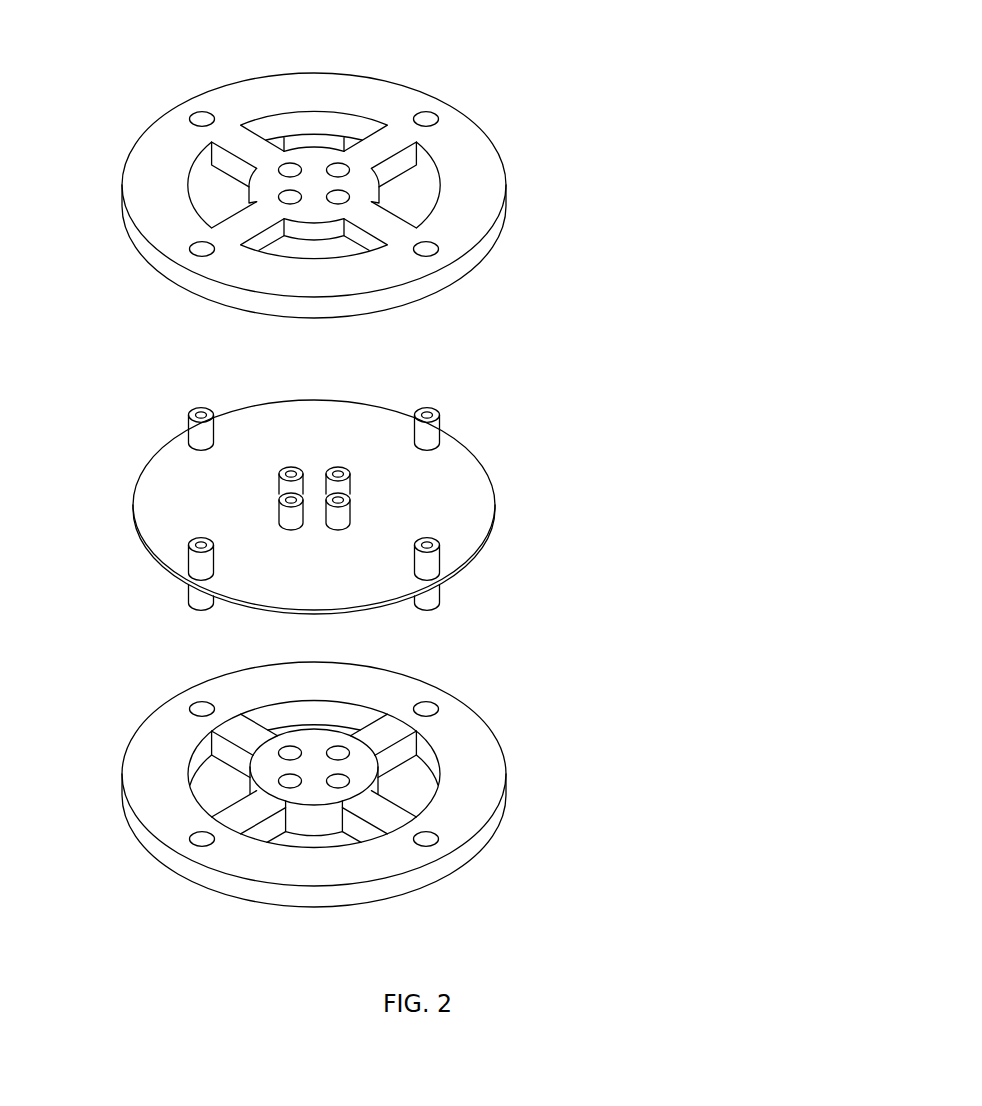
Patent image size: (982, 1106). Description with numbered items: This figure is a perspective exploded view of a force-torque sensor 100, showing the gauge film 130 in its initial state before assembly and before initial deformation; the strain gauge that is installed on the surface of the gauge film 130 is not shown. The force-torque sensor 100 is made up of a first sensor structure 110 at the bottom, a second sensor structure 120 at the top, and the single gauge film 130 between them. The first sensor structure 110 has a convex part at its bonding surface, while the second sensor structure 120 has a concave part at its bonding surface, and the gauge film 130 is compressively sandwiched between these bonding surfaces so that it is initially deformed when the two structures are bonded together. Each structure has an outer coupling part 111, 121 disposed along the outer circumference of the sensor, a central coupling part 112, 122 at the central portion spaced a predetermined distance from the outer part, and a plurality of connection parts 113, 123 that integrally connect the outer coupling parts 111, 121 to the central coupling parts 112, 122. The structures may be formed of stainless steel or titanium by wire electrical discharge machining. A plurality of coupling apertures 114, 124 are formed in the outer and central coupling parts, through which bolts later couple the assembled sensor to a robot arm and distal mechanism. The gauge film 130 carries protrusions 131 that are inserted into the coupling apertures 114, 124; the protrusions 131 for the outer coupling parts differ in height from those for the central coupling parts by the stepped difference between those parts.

The force-torque sensor 100 is at (592, 497).
The first sensor structure 110 is at (518, 773).
The outer coupling part 111 is at (477, 743).
The central coupling part 112 is at (360, 755).
The connection parts 113 is at (238, 730).
The coupling apertures 114 is at (287, 780).
The second sensor structure 120 is at (512, 201).
The outer coupling part 121 is at (472, 148).
The central coupling part 122 is at (320, 153).
The connection parts 123 is at (247, 145).
The coupling apertures 124 is at (287, 196).
The gauge film 130 is at (492, 456).
The protrusions 131 is at (335, 468).